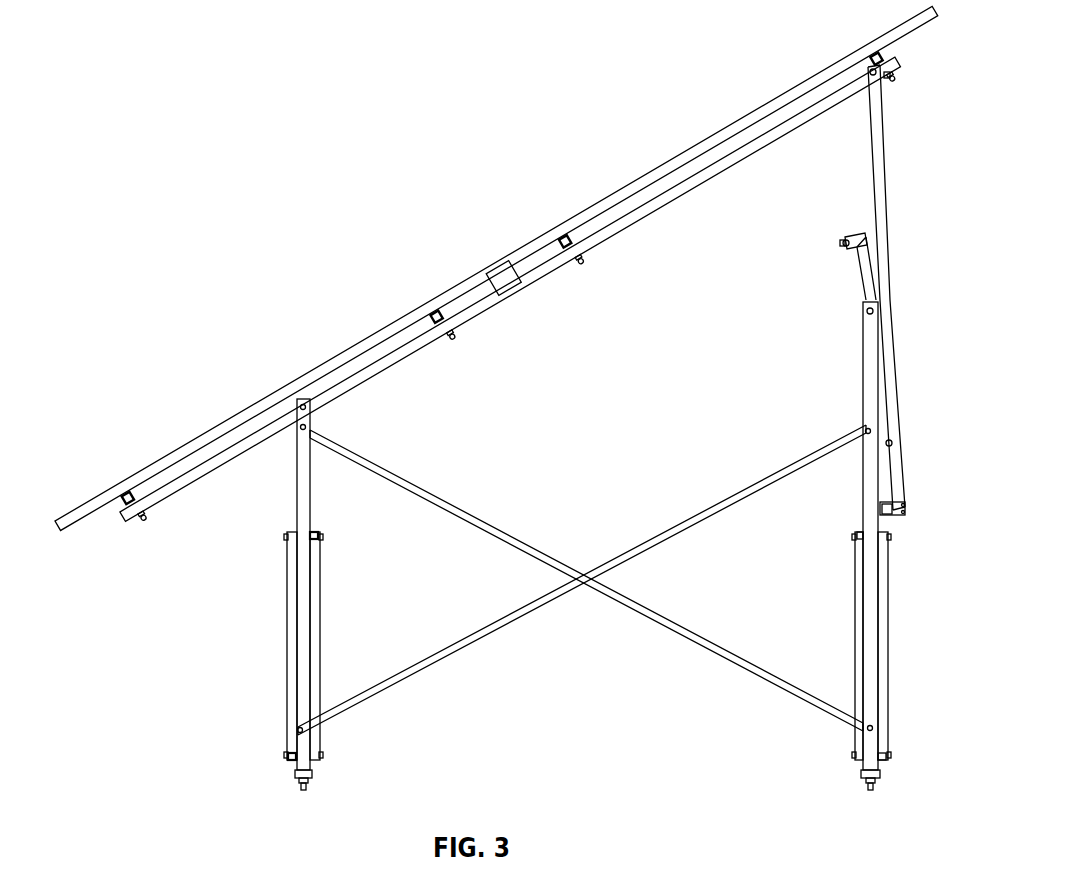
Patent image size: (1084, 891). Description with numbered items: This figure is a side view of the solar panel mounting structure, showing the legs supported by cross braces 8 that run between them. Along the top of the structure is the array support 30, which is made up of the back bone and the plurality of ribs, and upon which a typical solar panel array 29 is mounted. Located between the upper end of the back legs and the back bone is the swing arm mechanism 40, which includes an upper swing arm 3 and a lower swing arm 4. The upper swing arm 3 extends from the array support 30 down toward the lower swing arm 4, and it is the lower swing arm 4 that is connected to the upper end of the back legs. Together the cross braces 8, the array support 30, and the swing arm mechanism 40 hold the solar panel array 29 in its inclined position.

The upper swing arm 3 is at (885, 185).
The lower swing arm 4 is at (900, 483).
The cross brace 8 is at (530, 615).
The solar panel array 29 is at (565, 218).
The array support 30 is at (787, 132).
The swing arm mechanism 40 is at (892, 277).